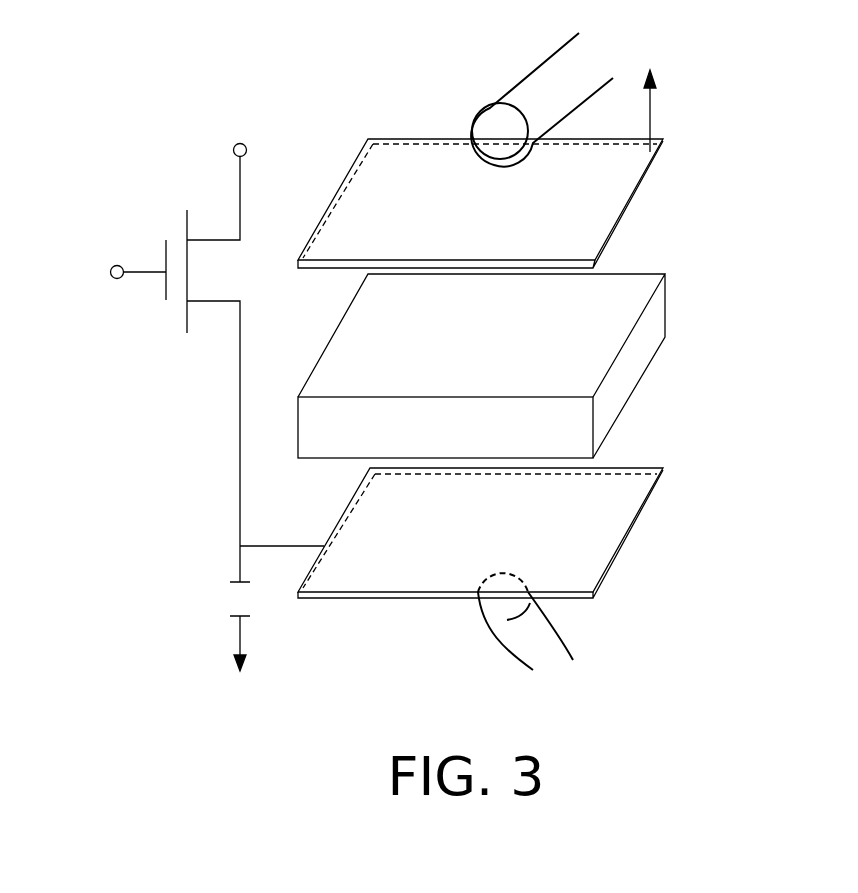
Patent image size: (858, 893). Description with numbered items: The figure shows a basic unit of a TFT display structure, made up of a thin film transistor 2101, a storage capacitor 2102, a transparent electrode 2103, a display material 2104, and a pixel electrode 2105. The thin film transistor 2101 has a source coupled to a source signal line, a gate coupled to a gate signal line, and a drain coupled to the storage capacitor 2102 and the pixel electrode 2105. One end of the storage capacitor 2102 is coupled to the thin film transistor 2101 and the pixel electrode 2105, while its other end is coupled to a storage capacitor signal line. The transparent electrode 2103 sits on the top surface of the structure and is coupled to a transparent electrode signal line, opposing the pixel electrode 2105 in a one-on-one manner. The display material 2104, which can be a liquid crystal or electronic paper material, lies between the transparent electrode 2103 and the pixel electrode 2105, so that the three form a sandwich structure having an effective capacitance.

The thin film transistor 2101 is at (233, 268).
The storage capacitor 2102 is at (227, 590).
The transparent electrode 2103 is at (608, 205).
The display material 2104 is at (590, 350).
The pixel electrode 2105 is at (607, 520).